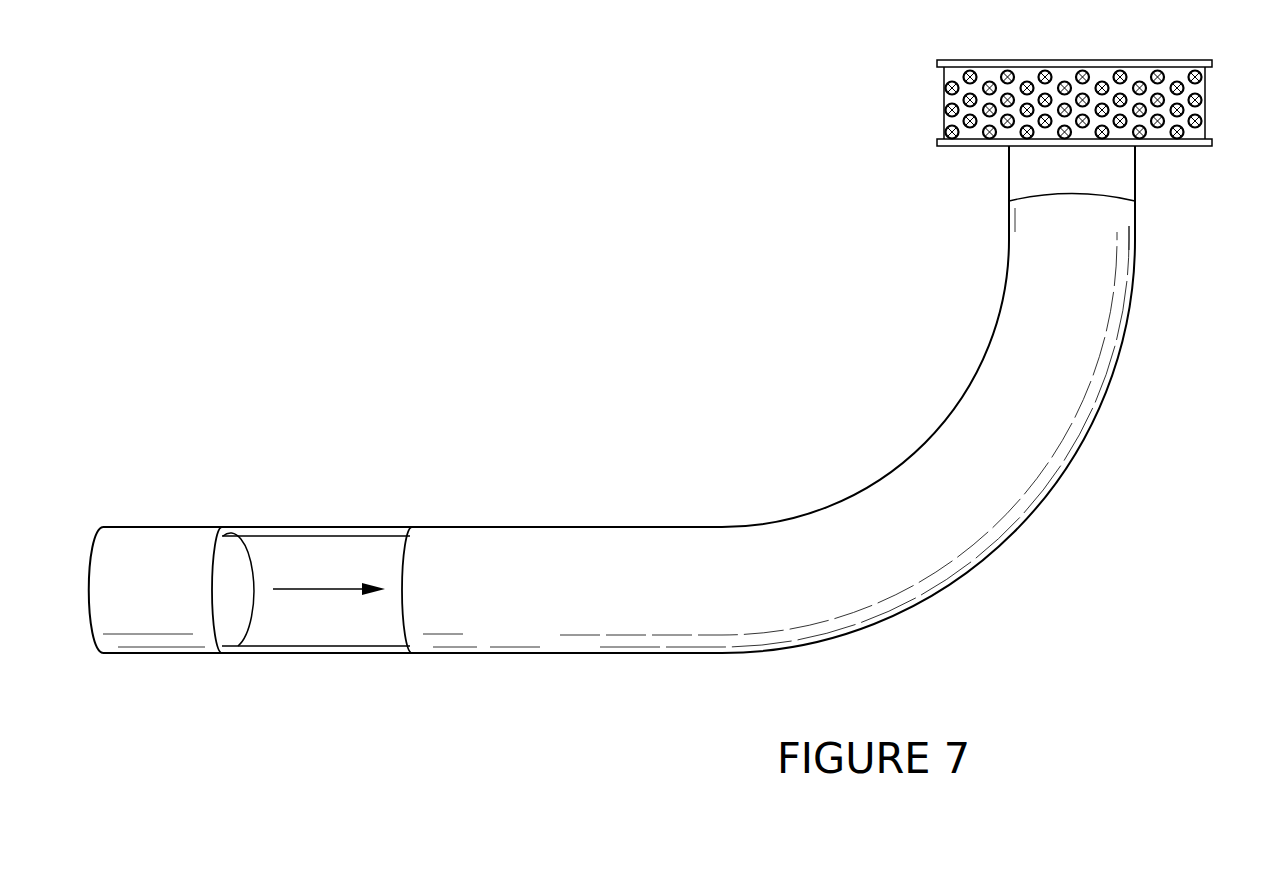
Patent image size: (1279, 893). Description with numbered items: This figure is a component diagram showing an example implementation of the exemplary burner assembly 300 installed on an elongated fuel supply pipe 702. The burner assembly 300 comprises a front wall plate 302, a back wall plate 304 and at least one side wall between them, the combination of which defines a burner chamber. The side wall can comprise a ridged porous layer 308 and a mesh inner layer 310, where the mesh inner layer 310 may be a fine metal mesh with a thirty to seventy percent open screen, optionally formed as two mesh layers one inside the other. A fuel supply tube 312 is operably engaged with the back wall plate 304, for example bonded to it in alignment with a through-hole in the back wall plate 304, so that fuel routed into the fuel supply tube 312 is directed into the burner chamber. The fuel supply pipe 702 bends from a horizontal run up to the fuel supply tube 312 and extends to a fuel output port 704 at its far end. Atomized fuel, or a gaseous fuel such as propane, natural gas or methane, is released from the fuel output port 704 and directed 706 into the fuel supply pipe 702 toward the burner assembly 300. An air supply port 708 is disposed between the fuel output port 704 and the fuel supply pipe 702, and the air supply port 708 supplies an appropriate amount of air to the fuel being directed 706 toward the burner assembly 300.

The burner assembly 300 is at (1039, 105).
The front wall plate 302 is at (1198, 60).
The back wall plate 304 is at (1198, 147).
The ridged porous layer 308 is at (1196, 111).
The mesh inner layer 310 is at (1196, 96).
The fuel supply tube 312 is at (1125, 178).
The elongated fuel supply pipe 702 is at (985, 528).
The fuel output port 704 is at (223, 567).
The direction of fuel 706 is at (357, 585).
The air supply port 708 is at (341, 545).